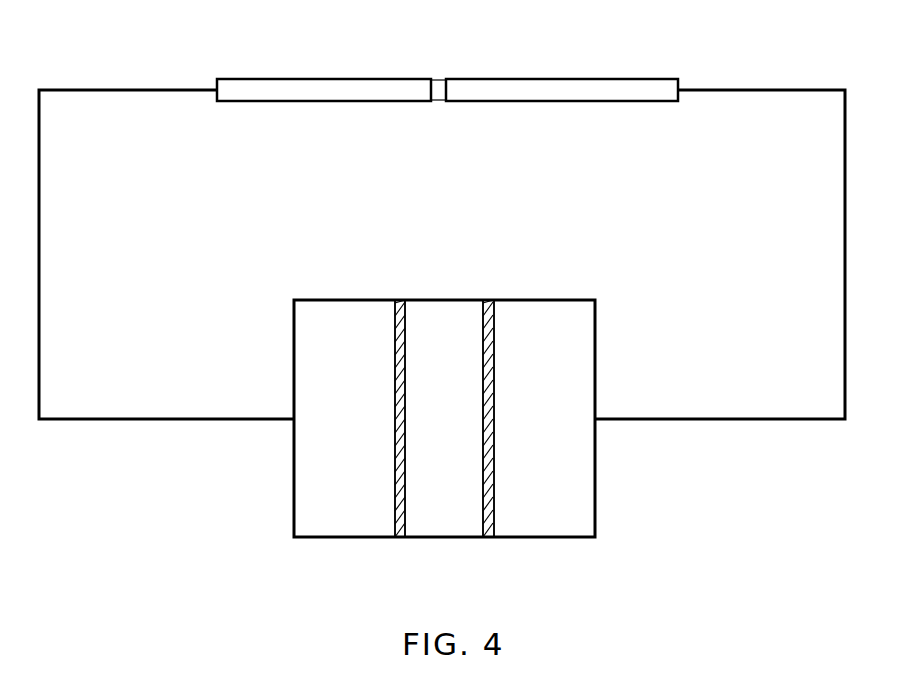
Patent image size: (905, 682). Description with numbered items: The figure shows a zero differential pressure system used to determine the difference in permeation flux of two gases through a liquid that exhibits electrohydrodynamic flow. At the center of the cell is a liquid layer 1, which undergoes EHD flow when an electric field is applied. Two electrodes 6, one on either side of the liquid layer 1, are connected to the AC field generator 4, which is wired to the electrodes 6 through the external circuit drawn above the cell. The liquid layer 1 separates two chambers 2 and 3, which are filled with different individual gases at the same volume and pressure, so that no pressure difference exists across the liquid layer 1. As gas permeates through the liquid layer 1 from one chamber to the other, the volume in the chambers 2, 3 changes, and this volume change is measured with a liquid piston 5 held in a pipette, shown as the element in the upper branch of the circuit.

The liquid layer 1 is at (450, 443).
The chamber 2 is at (361, 445).
The chamber 3 is at (557, 441).
The AC field generator 4 is at (460, 248).
The liquid piston 5 is at (441, 84).
The electrodes 6 is at (481, 546).